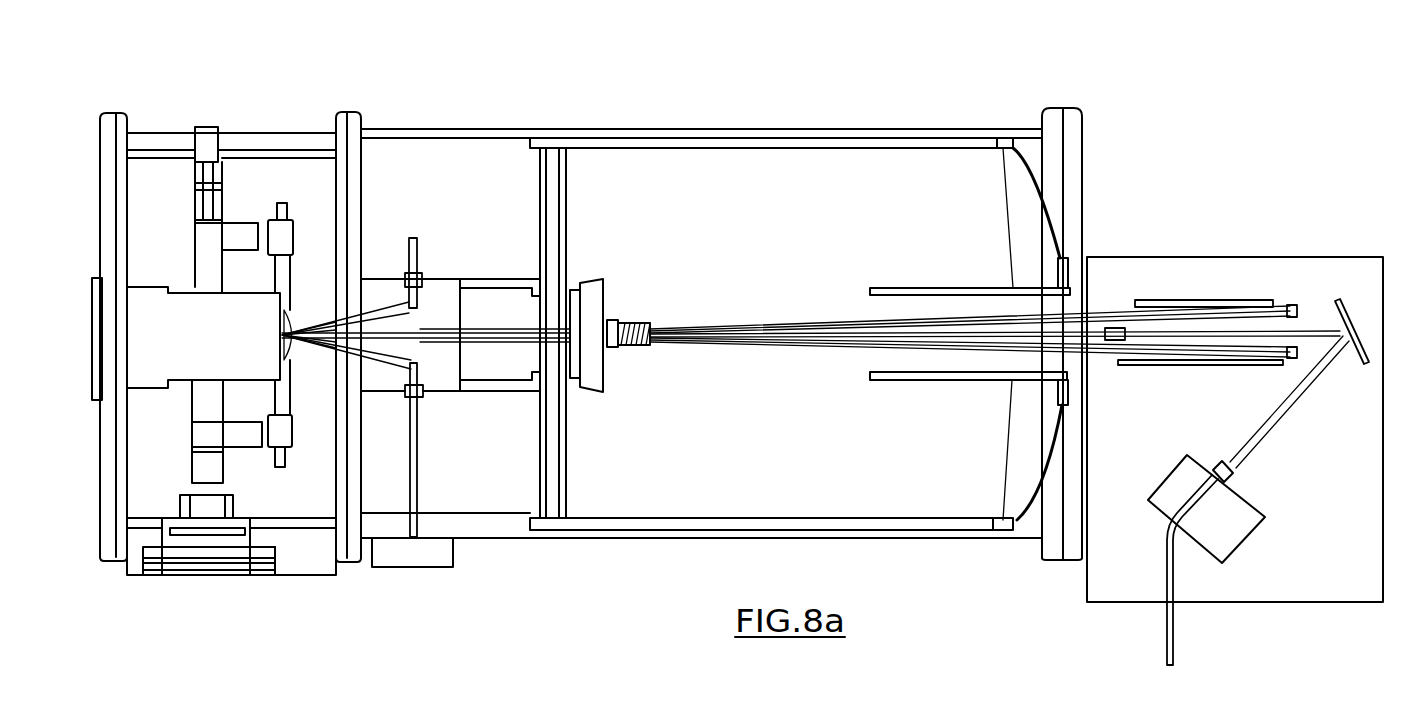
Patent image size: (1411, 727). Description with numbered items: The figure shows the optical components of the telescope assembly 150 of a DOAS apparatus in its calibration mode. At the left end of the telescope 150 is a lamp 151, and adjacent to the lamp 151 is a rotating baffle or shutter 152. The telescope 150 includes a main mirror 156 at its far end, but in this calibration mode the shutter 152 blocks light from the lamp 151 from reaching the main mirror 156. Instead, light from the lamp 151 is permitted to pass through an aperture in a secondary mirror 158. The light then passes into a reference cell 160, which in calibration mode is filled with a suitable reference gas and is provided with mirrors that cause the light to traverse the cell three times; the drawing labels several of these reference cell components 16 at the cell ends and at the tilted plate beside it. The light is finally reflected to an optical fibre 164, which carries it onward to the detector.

The telescope assembly 150 is at (1008, 80).
The lamp 151 is at (208, 351).
The rotating baffle or shutter 152 is at (424, 280).
The main mirror 156 is at (1023, 218).
The secondary mirror 158 is at (595, 292).
The optical fiber 16 is at (1300, 308).
The reference cell 160 is at (1177, 366).
The optical fibre 164 is at (1175, 645).